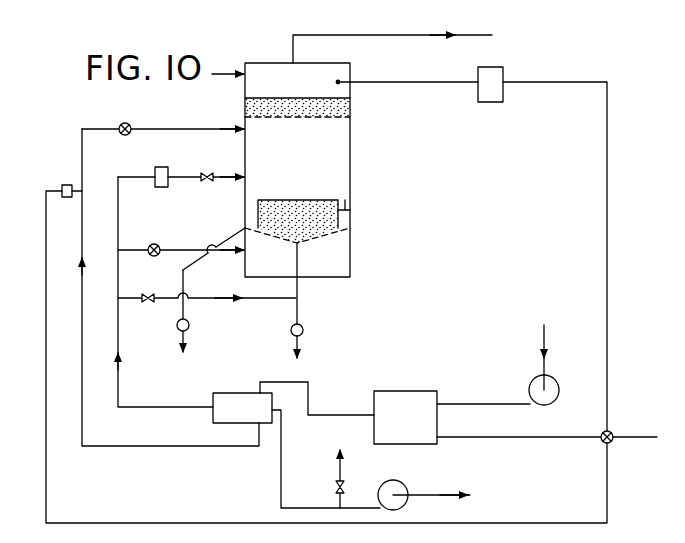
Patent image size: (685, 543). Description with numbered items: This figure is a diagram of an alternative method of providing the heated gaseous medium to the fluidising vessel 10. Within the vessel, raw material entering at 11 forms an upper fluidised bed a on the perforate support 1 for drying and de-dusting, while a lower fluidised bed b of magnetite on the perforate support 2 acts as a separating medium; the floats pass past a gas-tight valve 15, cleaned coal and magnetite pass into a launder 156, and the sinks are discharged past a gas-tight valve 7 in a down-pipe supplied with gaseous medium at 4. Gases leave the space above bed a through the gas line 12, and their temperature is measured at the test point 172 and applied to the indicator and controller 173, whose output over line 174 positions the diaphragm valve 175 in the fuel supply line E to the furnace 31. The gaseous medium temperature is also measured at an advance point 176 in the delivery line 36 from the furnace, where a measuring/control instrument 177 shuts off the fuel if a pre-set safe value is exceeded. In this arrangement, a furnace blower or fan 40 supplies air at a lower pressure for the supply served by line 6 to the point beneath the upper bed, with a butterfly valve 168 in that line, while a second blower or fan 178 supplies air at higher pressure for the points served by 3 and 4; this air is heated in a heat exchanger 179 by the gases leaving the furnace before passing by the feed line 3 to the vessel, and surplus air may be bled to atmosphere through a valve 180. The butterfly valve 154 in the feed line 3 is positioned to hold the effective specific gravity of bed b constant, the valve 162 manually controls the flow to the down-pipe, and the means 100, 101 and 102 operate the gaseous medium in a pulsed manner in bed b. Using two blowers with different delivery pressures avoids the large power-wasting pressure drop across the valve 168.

The fluidising vessel 10 is at (248, 62).
The raw material inlet 11 is at (220, 72).
The gas line 12 is at (382, 34).
The temperature measurement point 172 is at (338, 83).
The temperature indicator and controller 173 is at (505, 72).
The controller output line 174 is at (607, 213).
The diaphragm valve 175 is at (600, 444).
The advance point 176 is at (84, 190).
The measuring/control instrument 177 is at (67, 198).
The second blower or fan 178 is at (408, 488).
The heat exchanger 179 is at (236, 392).
The bleed valve 180 is at (333, 487).
The butterfly valve 168 is at (123, 124).
The gaseous medium supply line to first point 6 is at (207, 128).
The delivery line from furnace 36 is at (82, 155).
The pulsing means 100 is at (157, 167).
The pulsing means 101 is at (118, 204).
The pulsing means 102 is at (207, 175).
The butterfly valve 154 is at (160, 247).
The launder 156 is at (252, 205).
The valve 162 is at (148, 294).
The gas-tight valve 15 is at (177, 326).
The feed line for gaseous medium 3 is at (225, 251).
The gaseous medium supply to down-pipe 4 is at (264, 300).
The gas-tight valve 7 is at (303, 331).
The perforate support 2 is at (323, 233).
The perforate support 1 is at (298, 119).
The furnace 31 is at (487, 417).
The furnace blower or fan 40 is at (555, 379).
The upper fluidised bed a is at (280, 106).
The lower fluidised bed b is at (290, 200).
The fuel supply line E is at (646, 425).